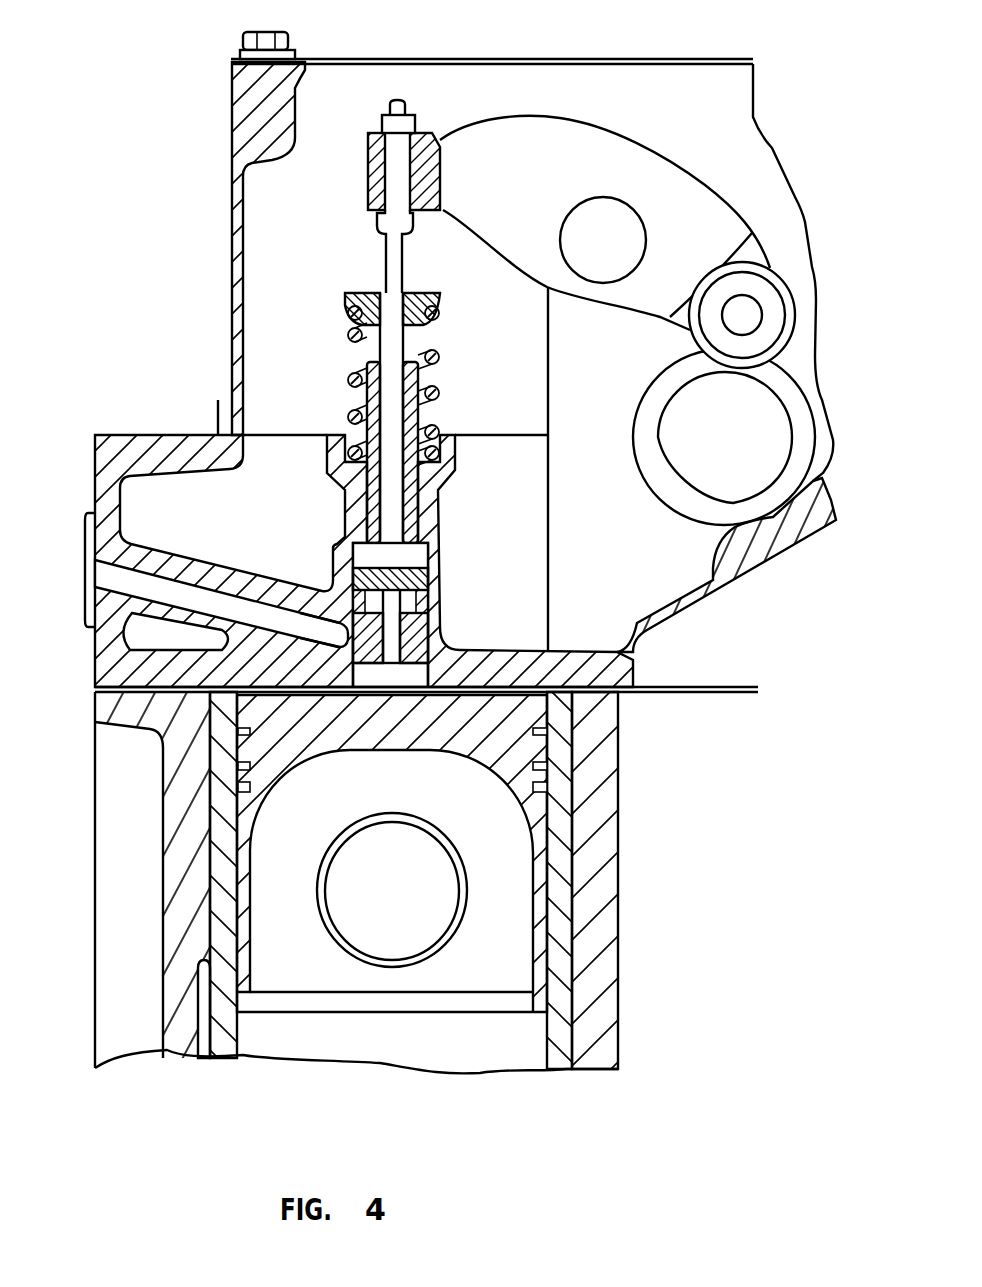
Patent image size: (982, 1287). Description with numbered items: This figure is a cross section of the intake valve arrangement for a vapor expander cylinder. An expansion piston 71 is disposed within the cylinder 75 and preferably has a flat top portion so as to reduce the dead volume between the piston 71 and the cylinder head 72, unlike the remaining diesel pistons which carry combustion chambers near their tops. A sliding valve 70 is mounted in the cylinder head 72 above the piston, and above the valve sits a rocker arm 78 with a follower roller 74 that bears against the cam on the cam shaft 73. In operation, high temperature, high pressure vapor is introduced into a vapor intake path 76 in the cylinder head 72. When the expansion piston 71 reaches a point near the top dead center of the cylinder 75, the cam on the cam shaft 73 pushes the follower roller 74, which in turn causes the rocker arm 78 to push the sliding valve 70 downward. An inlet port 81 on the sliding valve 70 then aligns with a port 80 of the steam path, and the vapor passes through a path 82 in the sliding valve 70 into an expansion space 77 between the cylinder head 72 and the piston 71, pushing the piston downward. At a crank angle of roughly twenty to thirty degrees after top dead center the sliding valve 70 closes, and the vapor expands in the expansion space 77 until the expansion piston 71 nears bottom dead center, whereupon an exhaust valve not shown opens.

The sliding valve 70 is at (410, 630).
The expansion piston 71 is at (512, 848).
The cylinder head 72 is at (113, 443).
The cam shaft 73 is at (763, 423).
The follower roller 74 is at (772, 303).
The cylinder 75 is at (540, 930).
The vapor intake path 76 is at (110, 572).
The expansion space 77 is at (273, 748).
The rocker arm 78 is at (563, 143).
The port of the steam path 80 is at (332, 620).
The inlet port 81 is at (328, 588).
The path 82 is at (388, 600).